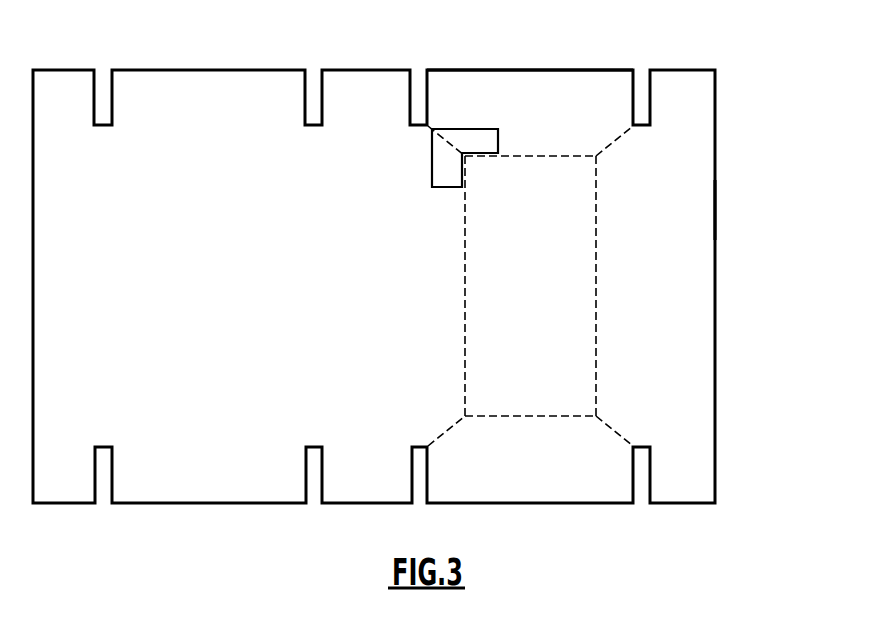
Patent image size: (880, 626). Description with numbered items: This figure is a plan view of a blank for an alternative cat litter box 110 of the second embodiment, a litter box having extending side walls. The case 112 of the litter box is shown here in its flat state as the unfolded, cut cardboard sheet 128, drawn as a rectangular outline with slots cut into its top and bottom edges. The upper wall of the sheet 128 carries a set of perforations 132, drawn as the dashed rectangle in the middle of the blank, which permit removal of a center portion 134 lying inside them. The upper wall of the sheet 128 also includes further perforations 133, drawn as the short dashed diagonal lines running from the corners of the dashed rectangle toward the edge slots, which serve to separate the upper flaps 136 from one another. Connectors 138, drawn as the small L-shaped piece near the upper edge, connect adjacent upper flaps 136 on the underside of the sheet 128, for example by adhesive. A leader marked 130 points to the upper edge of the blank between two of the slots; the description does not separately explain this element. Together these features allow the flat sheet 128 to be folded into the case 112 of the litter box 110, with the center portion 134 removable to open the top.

The cat litter box 110 is at (747, 144).
The case 112 is at (715, 207).
The cardboard sheet 128 is at (715, 288).
The top edge opening 130 is at (621, 71).
The perforations 132 is at (596, 223).
The perforations 133 is at (443, 138).
The center portion 134 is at (565, 197).
The upper flaps 136 is at (552, 100).
The connectors 138 is at (485, 132).